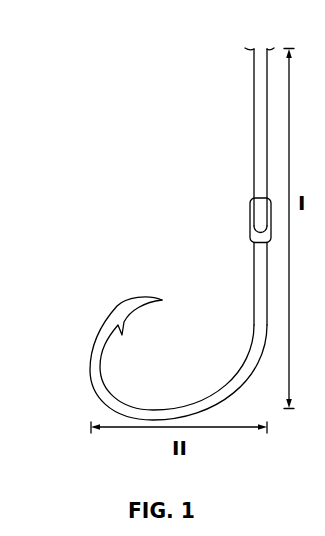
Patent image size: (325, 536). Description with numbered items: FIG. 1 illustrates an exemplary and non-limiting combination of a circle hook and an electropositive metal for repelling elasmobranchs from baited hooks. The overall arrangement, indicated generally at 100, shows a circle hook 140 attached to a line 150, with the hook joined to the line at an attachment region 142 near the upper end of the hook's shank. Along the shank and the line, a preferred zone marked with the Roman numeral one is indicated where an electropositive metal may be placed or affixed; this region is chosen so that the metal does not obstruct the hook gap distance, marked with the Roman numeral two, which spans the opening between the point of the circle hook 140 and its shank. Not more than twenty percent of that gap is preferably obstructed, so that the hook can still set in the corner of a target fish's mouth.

The fishing hook 100 is at (102, 46).
The line 150 is at (254, 88).
The eye / line attachment 142 is at (254, 262).
The circle hook 140 is at (91, 346).